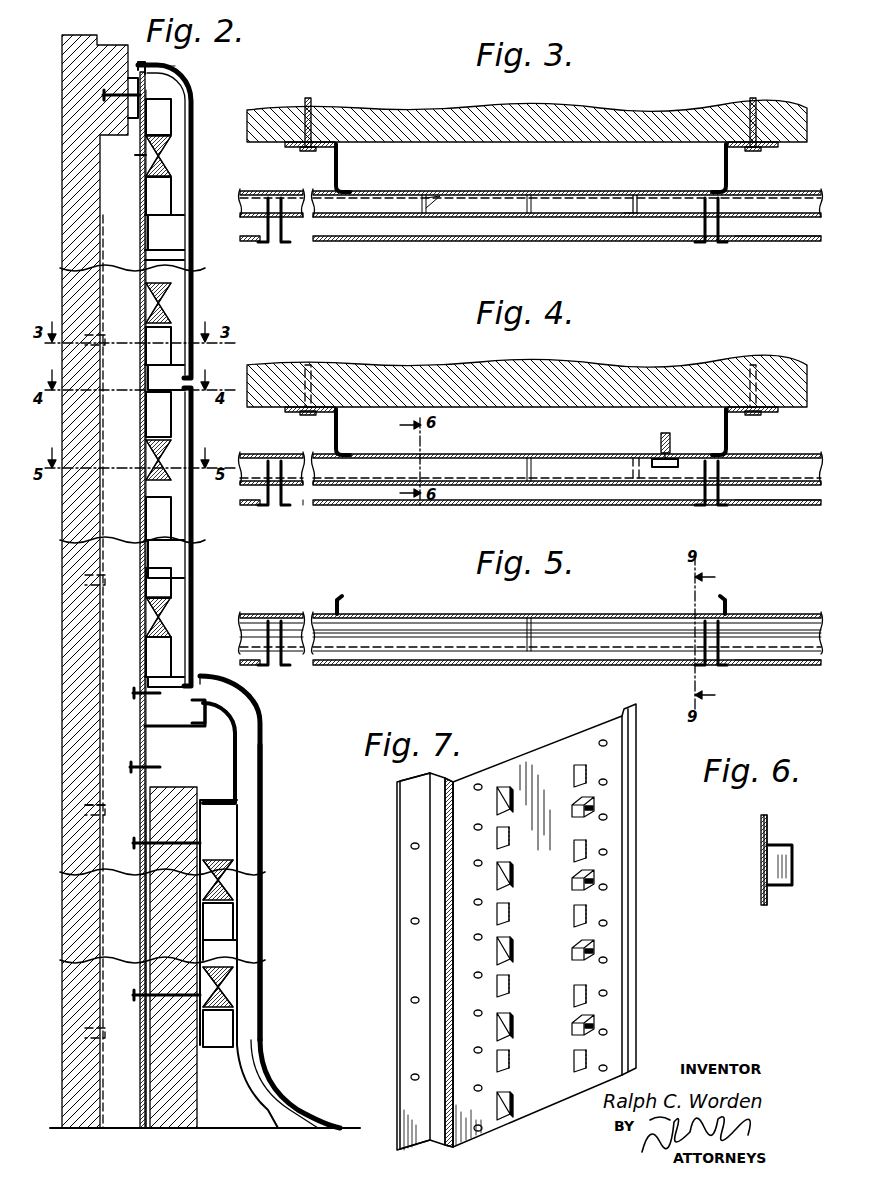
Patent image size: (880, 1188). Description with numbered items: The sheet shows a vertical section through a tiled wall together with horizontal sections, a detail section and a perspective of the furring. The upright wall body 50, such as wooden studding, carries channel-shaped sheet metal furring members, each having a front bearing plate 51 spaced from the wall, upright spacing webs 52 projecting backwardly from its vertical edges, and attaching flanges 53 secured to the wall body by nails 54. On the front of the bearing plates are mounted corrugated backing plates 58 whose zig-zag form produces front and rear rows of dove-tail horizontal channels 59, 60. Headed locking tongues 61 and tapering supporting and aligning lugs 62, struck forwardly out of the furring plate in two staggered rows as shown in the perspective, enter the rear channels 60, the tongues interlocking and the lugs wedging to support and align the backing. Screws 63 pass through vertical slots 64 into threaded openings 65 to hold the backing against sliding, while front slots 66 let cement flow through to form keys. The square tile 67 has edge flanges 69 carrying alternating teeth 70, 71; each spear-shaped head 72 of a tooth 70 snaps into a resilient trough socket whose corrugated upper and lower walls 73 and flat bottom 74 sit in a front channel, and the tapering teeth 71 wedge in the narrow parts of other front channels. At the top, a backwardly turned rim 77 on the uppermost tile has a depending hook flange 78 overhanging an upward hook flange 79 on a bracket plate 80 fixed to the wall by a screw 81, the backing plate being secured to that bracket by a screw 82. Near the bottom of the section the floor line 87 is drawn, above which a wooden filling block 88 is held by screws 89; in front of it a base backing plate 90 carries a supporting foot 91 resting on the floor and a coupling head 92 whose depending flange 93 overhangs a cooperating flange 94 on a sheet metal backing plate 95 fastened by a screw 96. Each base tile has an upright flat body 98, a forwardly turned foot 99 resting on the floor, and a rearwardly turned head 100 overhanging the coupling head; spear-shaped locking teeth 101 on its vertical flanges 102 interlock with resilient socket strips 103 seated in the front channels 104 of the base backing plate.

In FIG. 2, the upright body of a wall 50 is at (100, 268).
In FIG. 3, the upright body of a wall 50 is at (610, 110).
In FIG. 4, the upright body of a wall 50 is at (628, 368).
In FIG. 2, the front bearing plate 51 is at (140, 1128).
In FIG. 3, the front bearing plate 51 is at (496, 190).
In FIG. 4, the front bearing plate 51 is at (500, 453).
In FIG. 5, the front bearing plate 51 is at (548, 608).
In FIG. 7, the front bearing plate 51 is at (545, 1105).
In FIG. 6, the front bearing plate 51 is at (762, 905).
In FIG. 2, the upright spacing webs 52 is at (105, 1128).
In FIG. 3, the upright spacing webs 52 is at (340, 166).
In FIG. 4, the upright spacing webs 52 is at (340, 428).
In FIG. 5, the upright spacing webs 52 is at (340, 598).
In FIG. 7, the upright spacing webs 52 is at (430, 1140).
In FIG. 3, the attaching flanges 53 is at (778, 150).
In FIG. 4, the attaching flanges 53 is at (290, 411).
In FIG. 7, the attaching flanges 53 is at (398, 950).
In FIG. 2, the nails 54 is at (92, 808).
In FIG. 3, the nails 54 is at (308, 100).
In FIG. 4, the nails 54 is at (308, 414).
In FIG. 2, the backing plates 58 is at (146, 880).
In FIG. 3, the backing plates 58 is at (788, 220).
In FIG. 4, the backing plates 58 is at (790, 480).
In FIG. 5, the backing plates 58 is at (790, 630).
In FIG. 6, the backing plates 58 is at (768, 905).
In FIG. 2, the horizontal channels (front side) 59 is at (146, 260).
In FIG. 6, the horizontal channels (front side) 59 is at (770, 825).
In FIG. 2, the horizontal channels (rear side) 60 is at (146, 422).
In FIG. 6, the horizontal channels (rear side) 60 is at (764, 852).
In FIG. 3, the locking tongues or lugs 61 is at (436, 190).
In FIG. 7, the locking tongues or lugs 61 is at (497, 805).
In FIG. 6, the locking tongues or lugs 61 is at (770, 868).
In FIG. 2, the supporting and aligning lugs 62 is at (146, 342).
In FIG. 3, the supporting and aligning lugs 62 is at (627, 206).
In FIG. 7, the supporting and aligning lugs 62 is at (574, 803).
In FIG. 4, the screws 63 is at (660, 438).
In FIG. 4, the vertical slots 64 is at (636, 466).
In FIG. 4, the threaded openings 65 is at (672, 458).
In FIG. 2, the slots 66 is at (172, 192).
In FIG. 2, the square tile 67 is at (194, 268).
In FIG. 3, the square tile 67 is at (448, 244).
In FIG. 4, the square tile 67 is at (412, 508).
In FIG. 5, the square tile 67 is at (512, 668).
In FIG. 3, the rearwardly projecting flanges 69 is at (724, 242).
In FIG. 4, the rearwardly projecting flanges 69 is at (700, 500).
In FIG. 5, the anchoring teeth 70 is at (300, 668).
In FIG. 2, the supporting and aligning teeth 71 is at (185, 236).
In FIG. 4, the supporting and aligning teeth 71 is at (308, 506).
In FIG. 5, the spear-shaped anchoring head 72 is at (722, 668).
In FIG. 2, the upper and lower walls of socket 73 is at (152, 502).
In FIG. 5, the upper and lower walls of socket 73 is at (462, 632).
In FIG. 2, the bottom of socket 74 is at (152, 462).
In FIG. 2, the backwardly turned rim 77 is at (194, 95).
In FIG. 2, the depending hook flange 78 is at (154, 55).
In FIG. 2, the upwardly projecting hook flange 79 is at (176, 68).
In FIG. 2, the bracket plate 80 is at (128, 116).
In FIG. 2, the screw 81 is at (128, 84).
In FIG. 2, the screw 82 is at (138, 158).
In FIG. 2, the floor 87 is at (352, 1128).
In FIG. 2, the filling block 88 is at (180, 1128).
In FIG. 2, the screws 89 is at (135, 1000).
In FIG. 2, the base backing plate 90 is at (240, 1032).
In FIG. 2, the supporting foot 91 is at (266, 1122).
In FIG. 2, the coupling head 92 is at (235, 772).
In FIG. 2, the depending flange 93 is at (192, 704).
In FIG. 2, the cooperating flange 94 is at (215, 730).
In FIG. 2, the sheet metal backing plate 95 is at (148, 744).
In FIG. 2, the screw 96 is at (135, 774).
In FIG. 2, the upright flat body 98 is at (263, 836).
In FIG. 2, the forwardly turned foot 99 is at (305, 1102).
In FIG. 2, the rearwardly turned head 100 is at (245, 697).
In FIG. 2, the spear-shaped locking teeth 101 is at (240, 880).
In FIG. 2, the vertical flanges 102 is at (242, 945).
In FIG. 2, the resilient socket strips 103 is at (240, 985).
In FIG. 2, the front channels 104 is at (240, 915).